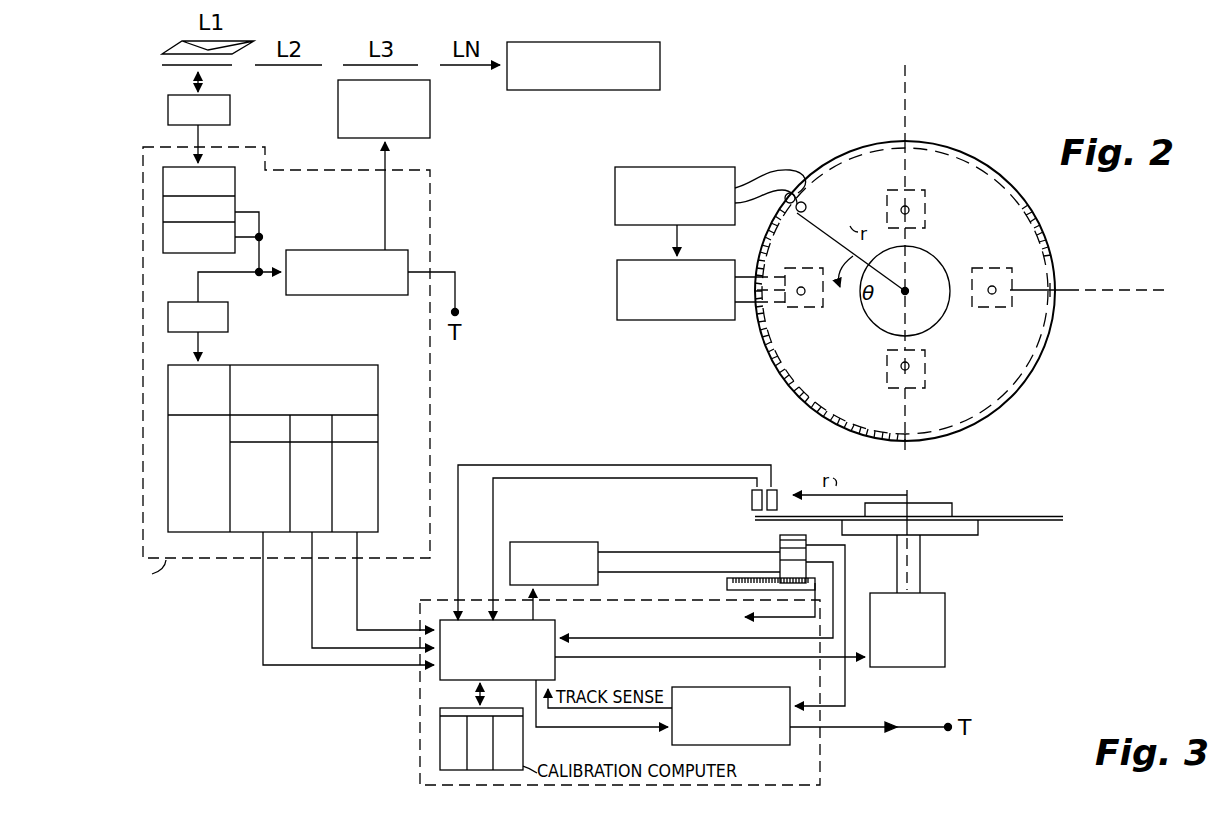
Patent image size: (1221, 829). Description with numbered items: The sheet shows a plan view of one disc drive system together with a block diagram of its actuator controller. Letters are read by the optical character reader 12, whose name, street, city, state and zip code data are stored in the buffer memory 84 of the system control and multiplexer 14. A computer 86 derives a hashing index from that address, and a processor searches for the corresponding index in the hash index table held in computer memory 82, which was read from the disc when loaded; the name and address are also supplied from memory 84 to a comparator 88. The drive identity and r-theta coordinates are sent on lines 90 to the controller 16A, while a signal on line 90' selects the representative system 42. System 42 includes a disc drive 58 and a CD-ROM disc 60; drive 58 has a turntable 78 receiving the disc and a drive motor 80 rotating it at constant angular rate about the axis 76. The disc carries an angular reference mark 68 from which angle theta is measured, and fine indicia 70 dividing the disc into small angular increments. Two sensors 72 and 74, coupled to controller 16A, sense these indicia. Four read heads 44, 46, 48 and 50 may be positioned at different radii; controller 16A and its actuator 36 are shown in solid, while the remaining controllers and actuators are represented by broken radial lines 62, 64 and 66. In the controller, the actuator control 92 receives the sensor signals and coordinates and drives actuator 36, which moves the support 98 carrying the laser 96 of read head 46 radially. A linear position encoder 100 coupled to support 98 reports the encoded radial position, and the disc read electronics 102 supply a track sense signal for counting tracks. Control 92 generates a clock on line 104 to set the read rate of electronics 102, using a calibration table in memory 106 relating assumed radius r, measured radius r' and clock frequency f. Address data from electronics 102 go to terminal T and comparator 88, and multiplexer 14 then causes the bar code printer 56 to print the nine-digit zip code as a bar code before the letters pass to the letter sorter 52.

In FIG. 3, the optical character reader 12 is at (230, 110).
In FIG. 3, the system control and multiplexer 14 is at (143, 491).
In FIG. 3, the controller 16A is at (704, 692).
In FIG. 2, the controller 16A is at (678, 167).
In FIG. 3, the actuator 36 is at (541, 542).
In FIG. 2, the actuator 36 is at (674, 322).
In FIG. 3, the representative system 42 is at (1016, 594).
In FIG. 2, the read head 44 is at (887, 366).
In FIG. 3, the read head 46 is at (822, 540).
In FIG. 2, the read head 46 is at (809, 312).
In FIG. 2, the read head 48 is at (926, 208).
In FIG. 2, the read head 50 is at (1003, 307).
In FIG. 3, the letter sorter 52 is at (660, 64).
In FIG. 3, the bar code printer 56 is at (430, 108).
In FIG. 3, the disc drive 58 is at (972, 506).
In FIG. 2, the disc drive 58 is at (922, 270).
In FIG. 3, the CD-ROM disc 60 is at (1063, 520).
In FIG. 2, the CD-ROM disc 60 is at (1050, 334).
In FIG. 2, the broken radial line 62 is at (906, 98).
In FIG. 2, the broken radial line 64 is at (1124, 285).
In FIG. 2, the broken radial line 66 is at (905, 403).
In FIG. 2, the angular reference mark 68 is at (803, 217).
In FIG. 2, the angular increment indicia 70 is at (776, 237).
In FIG. 3, the sensor 72 is at (778, 492).
In FIG. 2, the sensor 72 is at (807, 205).
In FIG. 3, the sensor 74 is at (752, 504).
In FIG. 2, the sensor 74 is at (788, 193).
In FIG. 3, the axis 76 is at (921, 548).
In FIG. 3, the turntable 78 is at (978, 535).
In FIG. 3, the drive motor 80 is at (945, 620).
In FIG. 3, the computer memory 82 is at (304, 365).
In FIG. 3, the buffer memory 84 is at (237, 204).
In FIG. 3, the computer 86 is at (228, 318).
In FIG. 3, the comparator 88 is at (333, 250).
In FIG. 3, the lines 90 is at (373, 590).
In FIG. 3, the line 90' is at (327, 603).
In FIG. 3, the actuator control 92 is at (548, 677).
In FIG. 3, the laser 96 is at (793, 536).
In FIG. 3, the support 98 is at (806, 548).
In FIG. 3, the linear position encoder 100 is at (727, 583).
In FIG. 3, the disc read electronics 102 is at (776, 747).
In FIG. 3, the clock line 104 is at (586, 730).
In FIG. 3, the memory 106 is at (440, 746).